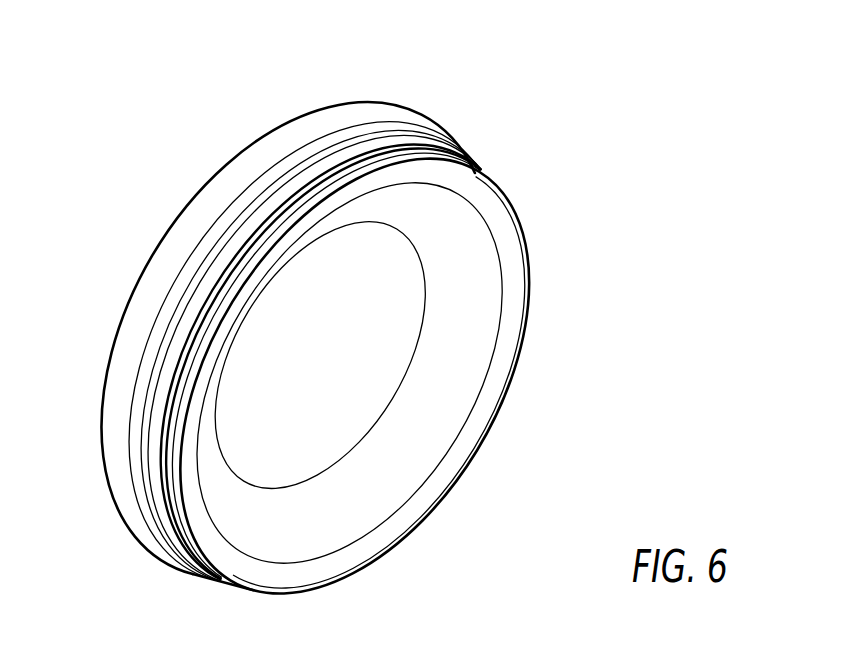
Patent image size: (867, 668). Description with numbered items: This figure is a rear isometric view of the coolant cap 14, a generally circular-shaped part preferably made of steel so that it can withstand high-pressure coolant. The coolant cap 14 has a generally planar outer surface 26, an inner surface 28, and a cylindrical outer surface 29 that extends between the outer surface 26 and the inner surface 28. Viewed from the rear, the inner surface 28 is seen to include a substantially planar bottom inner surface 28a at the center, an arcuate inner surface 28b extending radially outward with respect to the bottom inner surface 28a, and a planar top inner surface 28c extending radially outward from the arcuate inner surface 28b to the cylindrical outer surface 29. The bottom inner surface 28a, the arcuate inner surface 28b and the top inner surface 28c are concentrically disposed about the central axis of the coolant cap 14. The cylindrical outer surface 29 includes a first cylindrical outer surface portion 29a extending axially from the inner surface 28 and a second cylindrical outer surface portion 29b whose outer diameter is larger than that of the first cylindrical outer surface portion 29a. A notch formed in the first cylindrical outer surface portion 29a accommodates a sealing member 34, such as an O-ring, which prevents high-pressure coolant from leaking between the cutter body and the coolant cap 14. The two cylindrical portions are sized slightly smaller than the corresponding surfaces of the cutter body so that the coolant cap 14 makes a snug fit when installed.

The coolant cap 14 is at (337, 336).
The outer surface 26 is at (128, 287).
The sealing member 34 is at (274, 232).
The cylindrical outer surface 29 is at (465, 113).
The first cylindrical outer surface portion 29a is at (377, 147).
The second cylindrical outer surface portion 29b is at (365, 110).
The inner surface 28 is at (364, 375).
The bottom inner surface 28a is at (378, 350).
The arcuate inner surface 28b is at (467, 317).
The top inner surface 28c is at (520, 265).